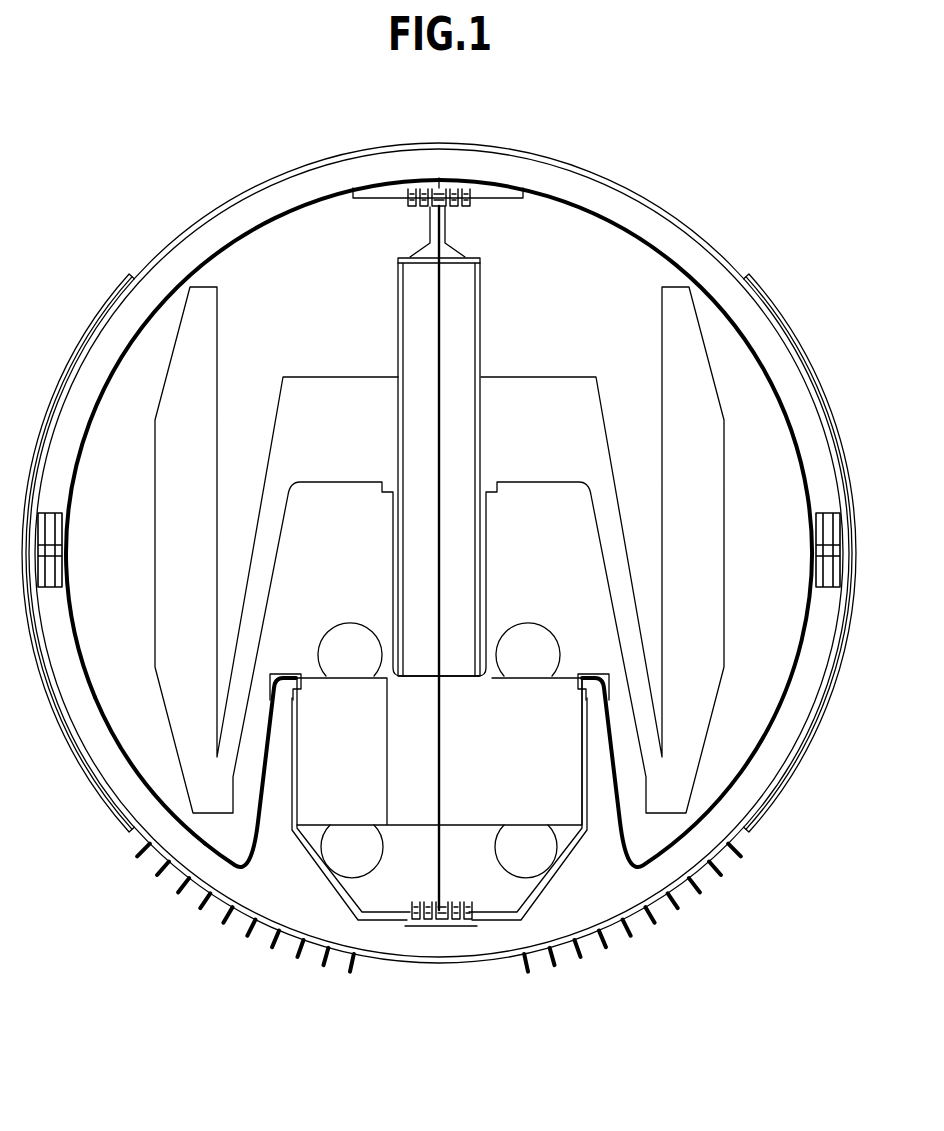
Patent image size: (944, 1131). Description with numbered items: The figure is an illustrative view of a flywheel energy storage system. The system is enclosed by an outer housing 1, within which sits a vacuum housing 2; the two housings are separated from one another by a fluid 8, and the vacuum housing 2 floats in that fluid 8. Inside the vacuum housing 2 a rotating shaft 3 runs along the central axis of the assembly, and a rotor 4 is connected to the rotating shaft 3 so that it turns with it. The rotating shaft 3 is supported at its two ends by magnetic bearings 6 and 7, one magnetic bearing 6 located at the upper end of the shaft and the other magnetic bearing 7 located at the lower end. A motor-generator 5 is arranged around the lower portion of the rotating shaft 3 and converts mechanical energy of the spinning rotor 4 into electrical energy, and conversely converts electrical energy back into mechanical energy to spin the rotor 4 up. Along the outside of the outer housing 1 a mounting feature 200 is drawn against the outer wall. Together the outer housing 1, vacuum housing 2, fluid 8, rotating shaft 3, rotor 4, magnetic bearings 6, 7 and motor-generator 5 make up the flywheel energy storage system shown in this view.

The outer housing 1 is at (278, 178).
The vacuum housing 2 is at (662, 248).
The rotating shaft 3 is at (398, 332).
The rotor 4 is at (525, 378).
The motor-generator 5 is at (360, 810).
The magnetic bearing 6 is at (405, 190).
The magnetic bearing 7 is at (410, 920).
The fluid 8 is at (150, 810).
The mounting bracket 200 is at (136, 830).